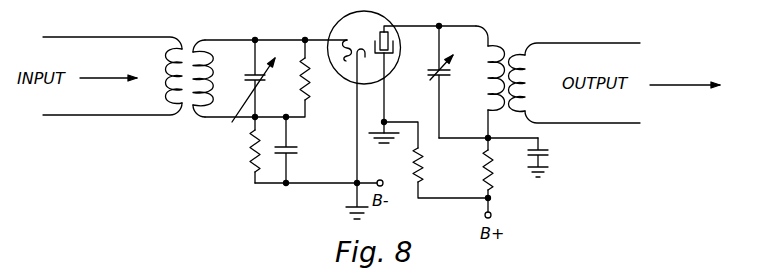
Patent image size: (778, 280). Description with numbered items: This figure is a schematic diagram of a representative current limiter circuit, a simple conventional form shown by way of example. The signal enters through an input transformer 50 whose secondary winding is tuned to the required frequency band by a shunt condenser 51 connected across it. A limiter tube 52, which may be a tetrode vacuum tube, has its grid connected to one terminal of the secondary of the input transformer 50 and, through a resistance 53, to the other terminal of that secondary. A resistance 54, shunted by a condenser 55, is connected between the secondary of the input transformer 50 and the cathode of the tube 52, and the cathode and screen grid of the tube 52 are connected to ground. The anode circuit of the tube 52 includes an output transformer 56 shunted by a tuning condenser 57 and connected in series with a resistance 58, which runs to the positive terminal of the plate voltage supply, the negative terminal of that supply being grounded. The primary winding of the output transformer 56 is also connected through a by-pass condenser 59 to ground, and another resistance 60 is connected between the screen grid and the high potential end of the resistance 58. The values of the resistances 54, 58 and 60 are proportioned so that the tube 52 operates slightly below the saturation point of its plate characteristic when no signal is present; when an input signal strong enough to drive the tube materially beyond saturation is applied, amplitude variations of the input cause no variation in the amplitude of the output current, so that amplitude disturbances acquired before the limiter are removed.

The input transformer 50 is at (192, 105).
The shunt condenser 51 is at (232, 122).
The limiter tube 52 is at (337, 32).
The resistance 53 is at (306, 102).
The resistance 54 is at (252, 157).
The condenser 55 is at (290, 155).
The output transformer 56 is at (506, 60).
The tuning condenser 57 is at (444, 78).
The resistance 58 is at (493, 165).
The by-pass condenser 59 is at (545, 155).
The resistance 60 is at (416, 182).